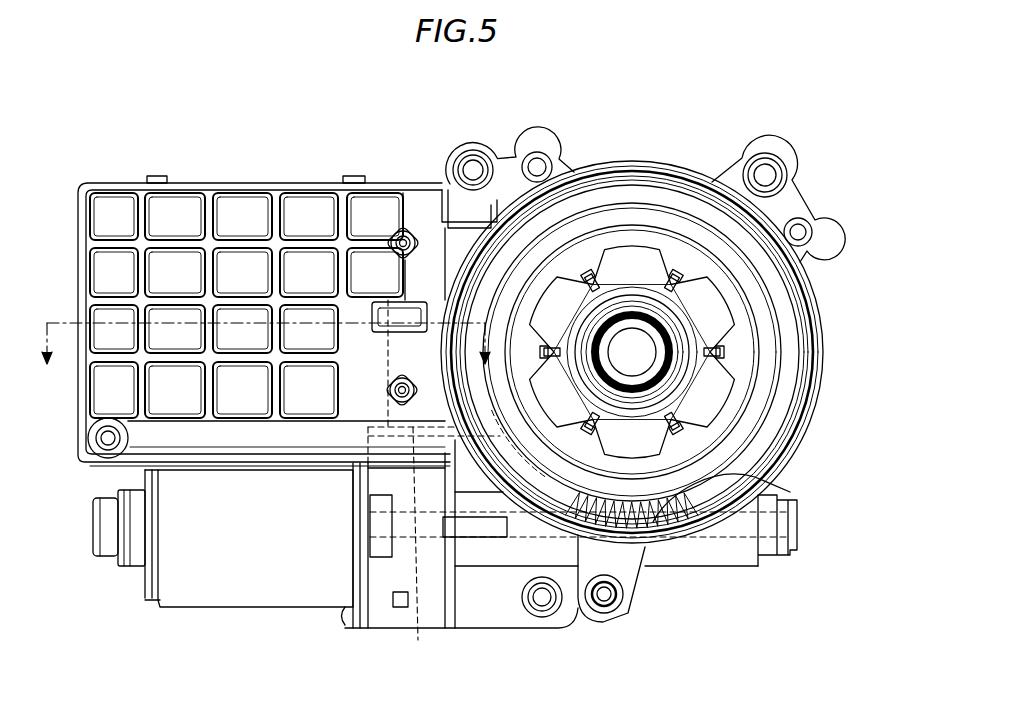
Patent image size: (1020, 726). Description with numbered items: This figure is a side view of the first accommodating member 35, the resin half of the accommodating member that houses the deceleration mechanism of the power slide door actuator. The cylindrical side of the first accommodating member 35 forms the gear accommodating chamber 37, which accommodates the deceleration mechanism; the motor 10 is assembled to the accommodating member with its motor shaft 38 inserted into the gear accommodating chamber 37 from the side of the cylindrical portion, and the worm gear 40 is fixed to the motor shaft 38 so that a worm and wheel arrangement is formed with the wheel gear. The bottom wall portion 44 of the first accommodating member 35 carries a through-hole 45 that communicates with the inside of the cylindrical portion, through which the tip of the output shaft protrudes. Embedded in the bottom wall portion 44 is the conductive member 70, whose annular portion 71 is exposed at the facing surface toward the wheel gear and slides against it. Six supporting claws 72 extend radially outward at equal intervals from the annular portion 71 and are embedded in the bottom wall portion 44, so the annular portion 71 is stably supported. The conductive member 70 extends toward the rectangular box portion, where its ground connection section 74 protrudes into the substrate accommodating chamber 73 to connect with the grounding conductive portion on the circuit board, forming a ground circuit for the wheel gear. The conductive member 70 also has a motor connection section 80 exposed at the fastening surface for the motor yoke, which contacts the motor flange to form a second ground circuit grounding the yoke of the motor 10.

The substrate accommodating chamber 73 is at (178, 200).
The first accommodating member 35 is at (766, 150).
The gear accommodating chamber 37 is at (622, 196).
The supporting claws 72 is at (590, 268).
The annular portion 71 is at (662, 282).
The bottom wall portion 44 is at (779, 323).
The ground connection section 74 is at (373, 368).
The through-hole 45 is at (607, 350).
The motor connection section 80 is at (372, 440).
The worm gear 40 is at (750, 483).
The motor 10 is at (200, 610).
The conductive member 70 is at (418, 612).
The motor shaft 38 is at (558, 628).